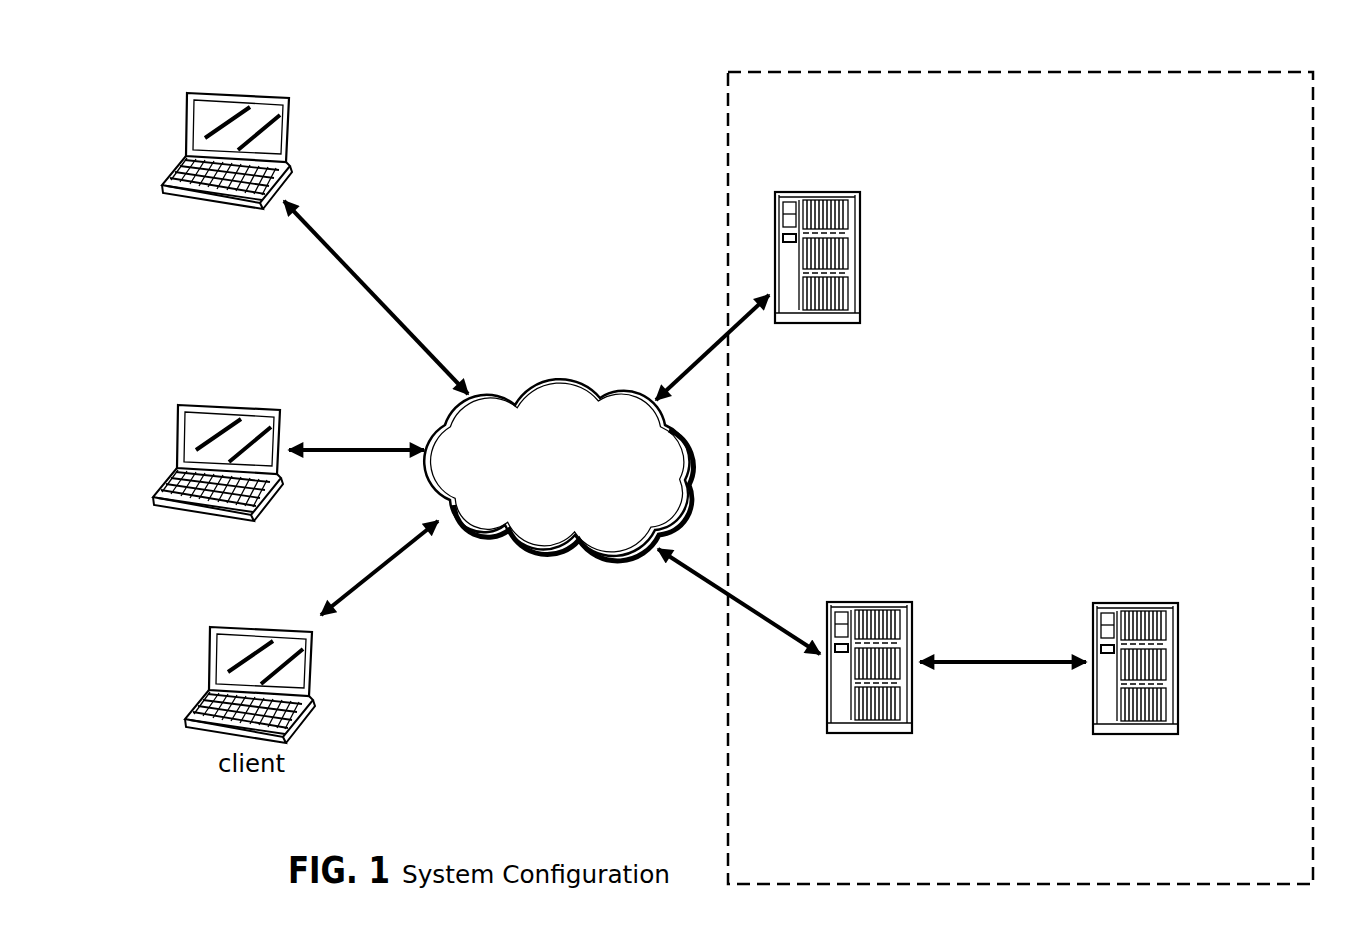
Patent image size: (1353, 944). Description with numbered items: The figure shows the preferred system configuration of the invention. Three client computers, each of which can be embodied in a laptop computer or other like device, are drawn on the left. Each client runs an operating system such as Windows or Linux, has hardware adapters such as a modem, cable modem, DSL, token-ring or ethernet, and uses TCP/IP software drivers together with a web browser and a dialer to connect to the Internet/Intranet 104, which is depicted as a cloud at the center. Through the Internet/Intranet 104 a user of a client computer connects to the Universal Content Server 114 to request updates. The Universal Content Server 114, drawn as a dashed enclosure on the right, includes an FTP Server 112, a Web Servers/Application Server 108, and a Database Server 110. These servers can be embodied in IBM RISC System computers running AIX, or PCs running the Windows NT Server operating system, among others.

The Internet/Intranet 104 is at (543, 380).
The Web Servers/Application Server 108 is at (882, 602).
The Database Server 110 is at (1152, 602).
The FTP Server 112 is at (823, 195).
The Universal Content Server 114 is at (727, 92).